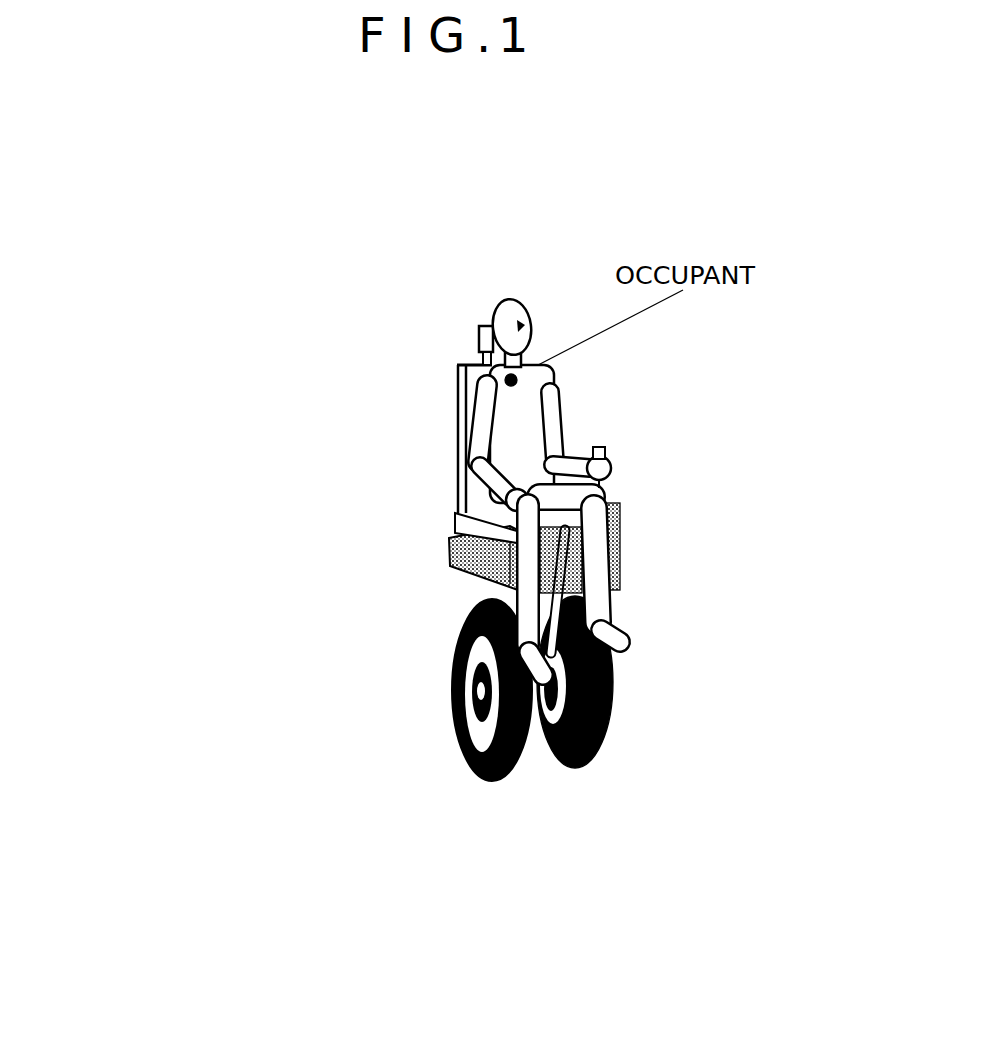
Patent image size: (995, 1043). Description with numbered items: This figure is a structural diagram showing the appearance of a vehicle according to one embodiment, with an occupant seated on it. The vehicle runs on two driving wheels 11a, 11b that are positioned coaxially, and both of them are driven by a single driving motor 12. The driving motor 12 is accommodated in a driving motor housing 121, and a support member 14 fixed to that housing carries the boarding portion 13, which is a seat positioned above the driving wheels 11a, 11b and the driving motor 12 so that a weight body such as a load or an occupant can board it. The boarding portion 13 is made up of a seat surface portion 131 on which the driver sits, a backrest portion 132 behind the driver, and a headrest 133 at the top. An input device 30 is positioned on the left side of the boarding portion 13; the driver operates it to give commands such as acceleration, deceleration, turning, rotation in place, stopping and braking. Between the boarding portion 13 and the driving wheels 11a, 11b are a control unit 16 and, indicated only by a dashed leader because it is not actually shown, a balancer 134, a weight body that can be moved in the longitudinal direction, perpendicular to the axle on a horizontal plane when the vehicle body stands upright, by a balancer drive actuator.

The headrest 133 is at (487, 335).
The backrest portion 132 is at (458, 352).
The boarding portion 13 is at (314, 403).
The seat surface portion 131 is at (457, 516).
The balancer 134 is at (445, 532).
The control unit 16 is at (458, 548).
The support member 14 is at (478, 632).
The driving motor 12 is at (310, 692).
The driving wheel 11a is at (331, 734).
The driving wheel 11b is at (590, 760).
The driving motor housing 121 is at (533, 763).
The input device 30 is at (605, 455).